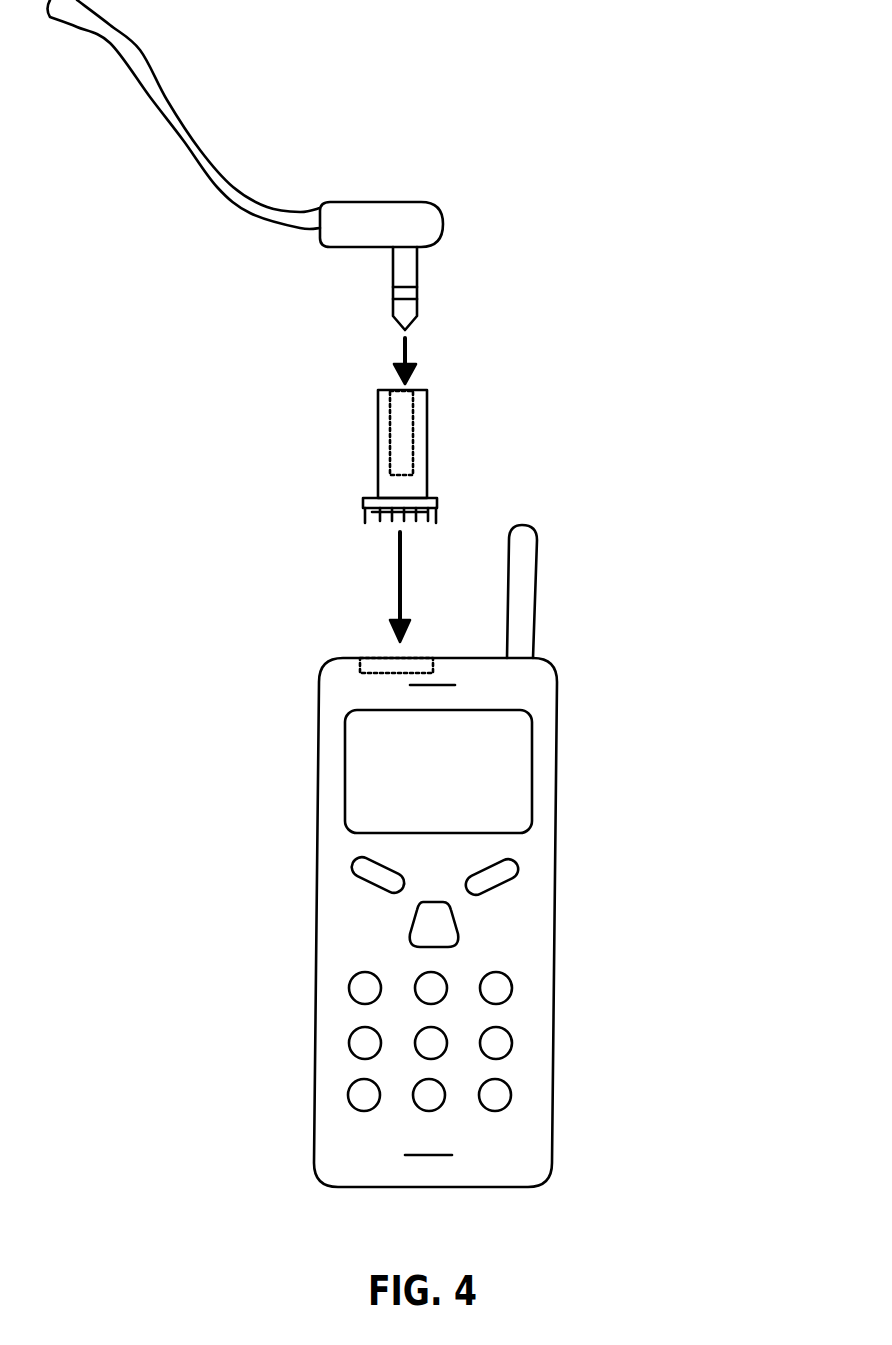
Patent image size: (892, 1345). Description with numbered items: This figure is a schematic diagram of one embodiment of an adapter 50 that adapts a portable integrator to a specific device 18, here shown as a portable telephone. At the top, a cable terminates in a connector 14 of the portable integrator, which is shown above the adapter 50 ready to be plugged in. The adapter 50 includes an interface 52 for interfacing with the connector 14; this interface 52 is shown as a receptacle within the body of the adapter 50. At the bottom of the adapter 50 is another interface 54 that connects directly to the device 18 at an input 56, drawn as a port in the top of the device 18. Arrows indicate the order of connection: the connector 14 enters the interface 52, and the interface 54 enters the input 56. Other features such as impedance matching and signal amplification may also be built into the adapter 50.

The connector 14 is at (437, 220).
The device 18 is at (542, 952).
The adapter 50 is at (432, 445).
The interface 52 is at (408, 392).
The interface 54 is at (437, 508).
The input 56 is at (375, 658).